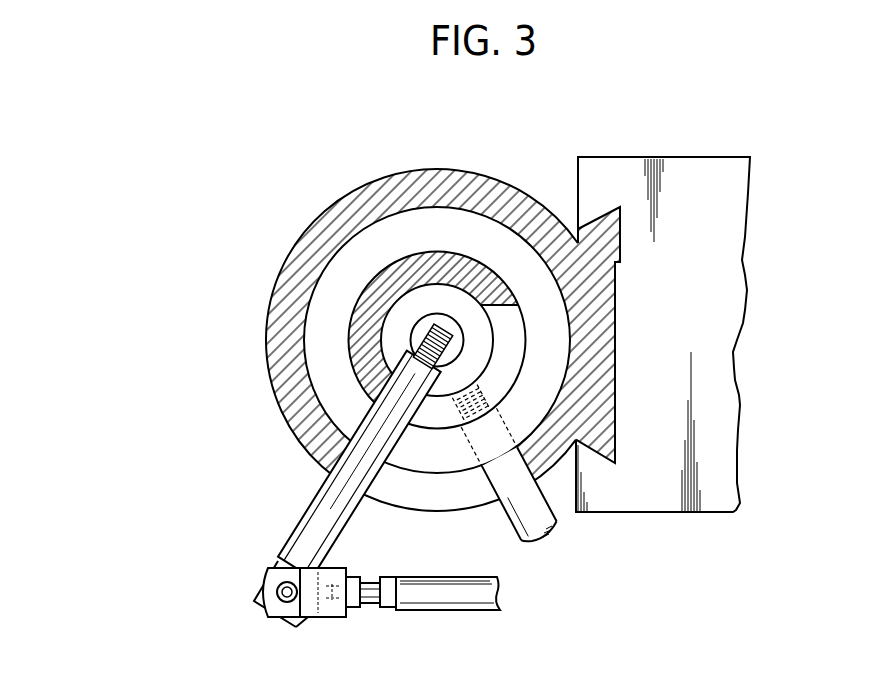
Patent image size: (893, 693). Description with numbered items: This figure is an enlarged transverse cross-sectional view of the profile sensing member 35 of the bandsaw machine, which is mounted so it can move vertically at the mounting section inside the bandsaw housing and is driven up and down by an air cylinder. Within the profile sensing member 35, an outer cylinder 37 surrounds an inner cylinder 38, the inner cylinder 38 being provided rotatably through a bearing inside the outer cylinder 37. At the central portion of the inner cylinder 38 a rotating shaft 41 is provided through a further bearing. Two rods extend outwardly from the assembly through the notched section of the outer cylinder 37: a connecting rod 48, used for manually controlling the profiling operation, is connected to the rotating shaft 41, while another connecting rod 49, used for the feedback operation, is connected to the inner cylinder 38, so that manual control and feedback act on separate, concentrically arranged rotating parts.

The profile sensing member 35 is at (266, 331).
The outer cylinder 37 is at (438, 180).
The inner cylinder 38 is at (482, 273).
The rotating shaft 41 is at (441, 333).
The connecting rod 48 is at (308, 528).
The connecting rod 49 is at (528, 528).